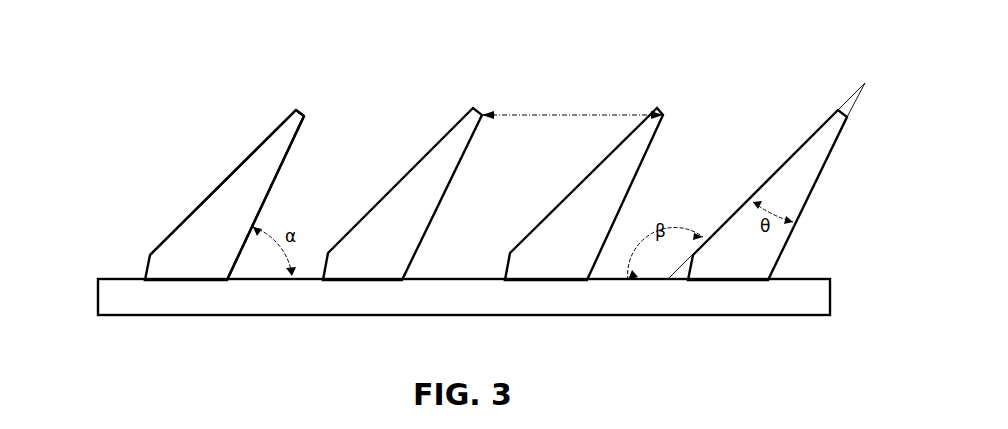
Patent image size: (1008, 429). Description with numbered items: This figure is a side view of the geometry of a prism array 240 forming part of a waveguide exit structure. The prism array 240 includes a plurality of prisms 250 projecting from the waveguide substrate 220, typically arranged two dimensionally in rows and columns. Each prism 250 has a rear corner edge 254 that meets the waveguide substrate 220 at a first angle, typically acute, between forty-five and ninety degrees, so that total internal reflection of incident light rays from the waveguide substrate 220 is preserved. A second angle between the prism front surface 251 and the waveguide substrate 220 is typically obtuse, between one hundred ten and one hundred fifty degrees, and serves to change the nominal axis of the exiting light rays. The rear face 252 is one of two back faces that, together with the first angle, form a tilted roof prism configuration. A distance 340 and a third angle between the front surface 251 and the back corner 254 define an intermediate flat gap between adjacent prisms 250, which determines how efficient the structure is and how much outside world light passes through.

The waveguide substrate 220 is at (123, 295).
The prism array 240 is at (126, 61).
The prism 250 is at (270, 150).
The prism front surface 251 is at (222, 166).
The rear face 252 is at (254, 182).
The rear corner edge 254 is at (293, 140).
The distance 340 is at (568, 115).